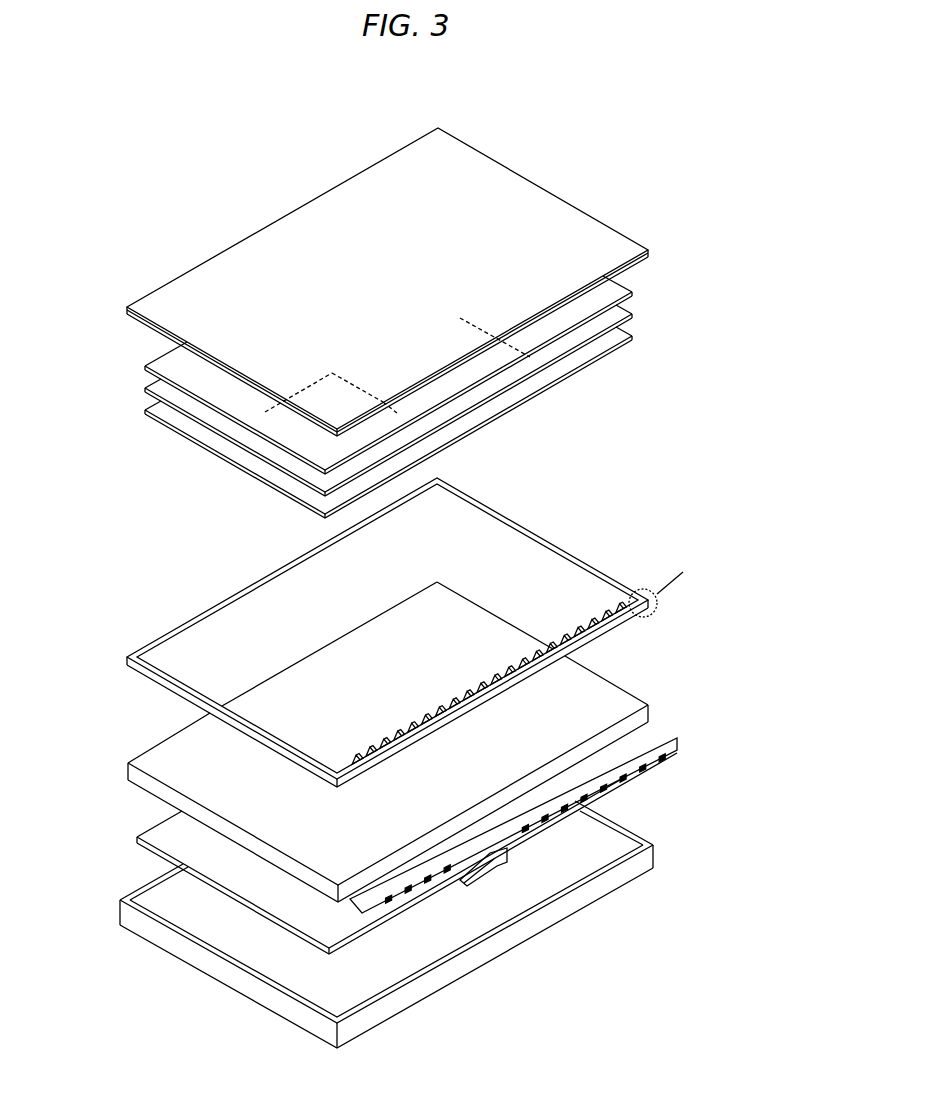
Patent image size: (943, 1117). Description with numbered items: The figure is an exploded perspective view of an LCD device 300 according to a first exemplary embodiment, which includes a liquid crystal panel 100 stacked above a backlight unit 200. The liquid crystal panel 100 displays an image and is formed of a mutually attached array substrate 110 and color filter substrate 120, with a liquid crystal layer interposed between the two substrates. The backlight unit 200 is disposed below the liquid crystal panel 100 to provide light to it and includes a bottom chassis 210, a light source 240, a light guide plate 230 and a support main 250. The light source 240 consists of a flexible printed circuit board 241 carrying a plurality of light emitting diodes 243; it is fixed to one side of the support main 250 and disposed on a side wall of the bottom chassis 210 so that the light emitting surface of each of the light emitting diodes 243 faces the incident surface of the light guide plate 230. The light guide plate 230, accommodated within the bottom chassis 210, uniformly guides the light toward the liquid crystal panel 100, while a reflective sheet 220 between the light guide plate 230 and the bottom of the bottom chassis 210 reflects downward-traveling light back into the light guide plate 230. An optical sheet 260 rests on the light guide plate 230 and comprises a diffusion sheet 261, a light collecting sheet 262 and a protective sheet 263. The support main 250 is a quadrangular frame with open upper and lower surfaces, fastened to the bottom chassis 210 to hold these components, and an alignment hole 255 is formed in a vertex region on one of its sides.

The LCD device 300 is at (693, 134).
The liquid crystal panel 100 is at (439, 282).
The color filter substrate 120 is at (651, 245).
The array substrate 110 is at (654, 259).
The backlight unit 200 is at (762, 895).
The optical sheet 260 is at (326, 397).
The protective sheet 263 is at (146, 366).
The light collecting sheet 262 is at (147, 388).
The diffusion sheet 261 is at (147, 410).
The support main 250 is at (410, 632).
The alignment hole 255 is at (643, 598).
The light guide plate 230 is at (652, 709).
The reflective sheet 220 is at (163, 834).
The light source 240 is at (513, 874).
The flexible printed circuit board 241 is at (500, 833).
The light emitting diodes 243 is at (452, 883).
The bottom chassis 210 is at (393, 1023).